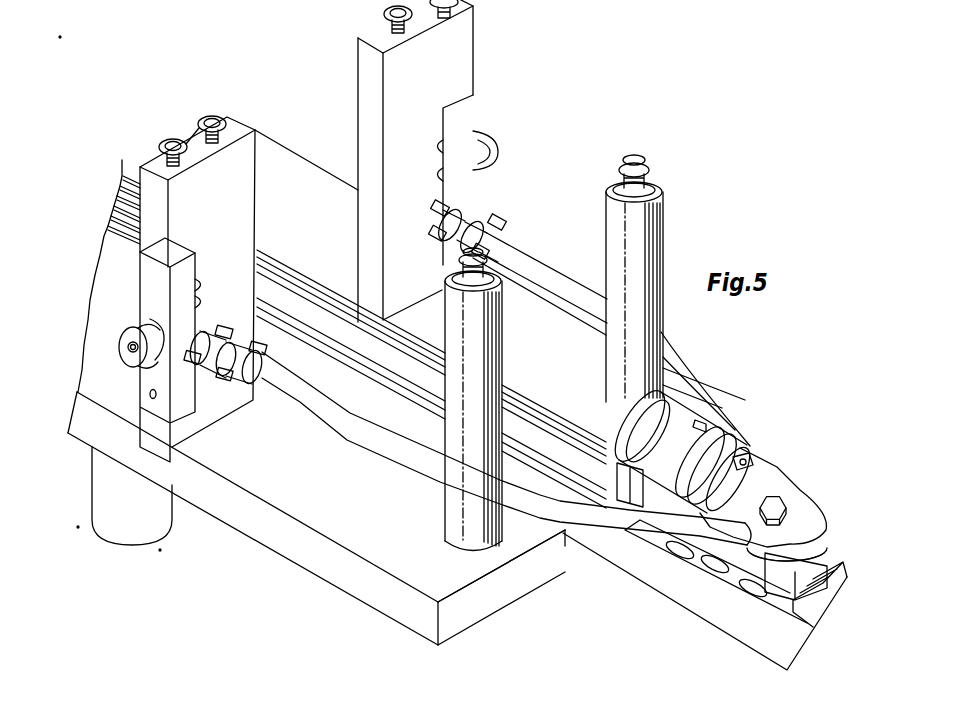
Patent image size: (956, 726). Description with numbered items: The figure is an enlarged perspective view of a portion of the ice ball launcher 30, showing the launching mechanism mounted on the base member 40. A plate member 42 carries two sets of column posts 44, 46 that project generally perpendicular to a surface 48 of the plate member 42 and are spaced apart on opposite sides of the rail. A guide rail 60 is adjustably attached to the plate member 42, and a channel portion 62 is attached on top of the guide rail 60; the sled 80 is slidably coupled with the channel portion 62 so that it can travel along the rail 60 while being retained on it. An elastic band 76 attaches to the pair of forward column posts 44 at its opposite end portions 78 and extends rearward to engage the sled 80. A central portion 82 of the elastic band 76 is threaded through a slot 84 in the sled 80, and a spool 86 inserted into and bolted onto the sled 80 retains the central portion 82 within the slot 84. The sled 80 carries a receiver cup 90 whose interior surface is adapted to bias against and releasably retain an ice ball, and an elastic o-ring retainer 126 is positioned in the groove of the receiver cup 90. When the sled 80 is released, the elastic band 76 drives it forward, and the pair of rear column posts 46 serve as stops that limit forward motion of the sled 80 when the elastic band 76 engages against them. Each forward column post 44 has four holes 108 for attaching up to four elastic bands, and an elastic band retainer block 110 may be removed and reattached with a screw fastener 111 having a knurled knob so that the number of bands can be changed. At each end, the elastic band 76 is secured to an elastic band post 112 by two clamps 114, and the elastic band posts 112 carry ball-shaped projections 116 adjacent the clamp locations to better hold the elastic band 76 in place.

The ice ball launcher 30 is at (640, 88).
The base member 40 is at (559, 581).
The plate member 42 is at (342, 590).
The forward column posts 44 is at (255, 175).
The rear column posts 46 is at (487, 358).
The surface of the plate member 48 is at (402, 531).
The guide rail 60 is at (730, 607).
The channel portion 62 is at (552, 462).
The elastic band 76 is at (681, 346).
The end portions of the elastic band 78 is at (543, 252).
The sled 80 is at (812, 507).
The central portion of the elastic band 82 is at (646, 526).
The slot 84 is at (815, 560).
The spool 86 is at (740, 575).
The receiver cup 90 is at (712, 450).
The holes 108 is at (208, 345).
The elastic band retainer block 110 is at (150, 300).
The screw fastener 111 is at (120, 350).
The elastic band post 112 is at (165, 352).
The clamps 114 is at (240, 353).
The ball-shaped projections 116 is at (232, 386).
The elastic o-ring retainer 126 is at (680, 430).